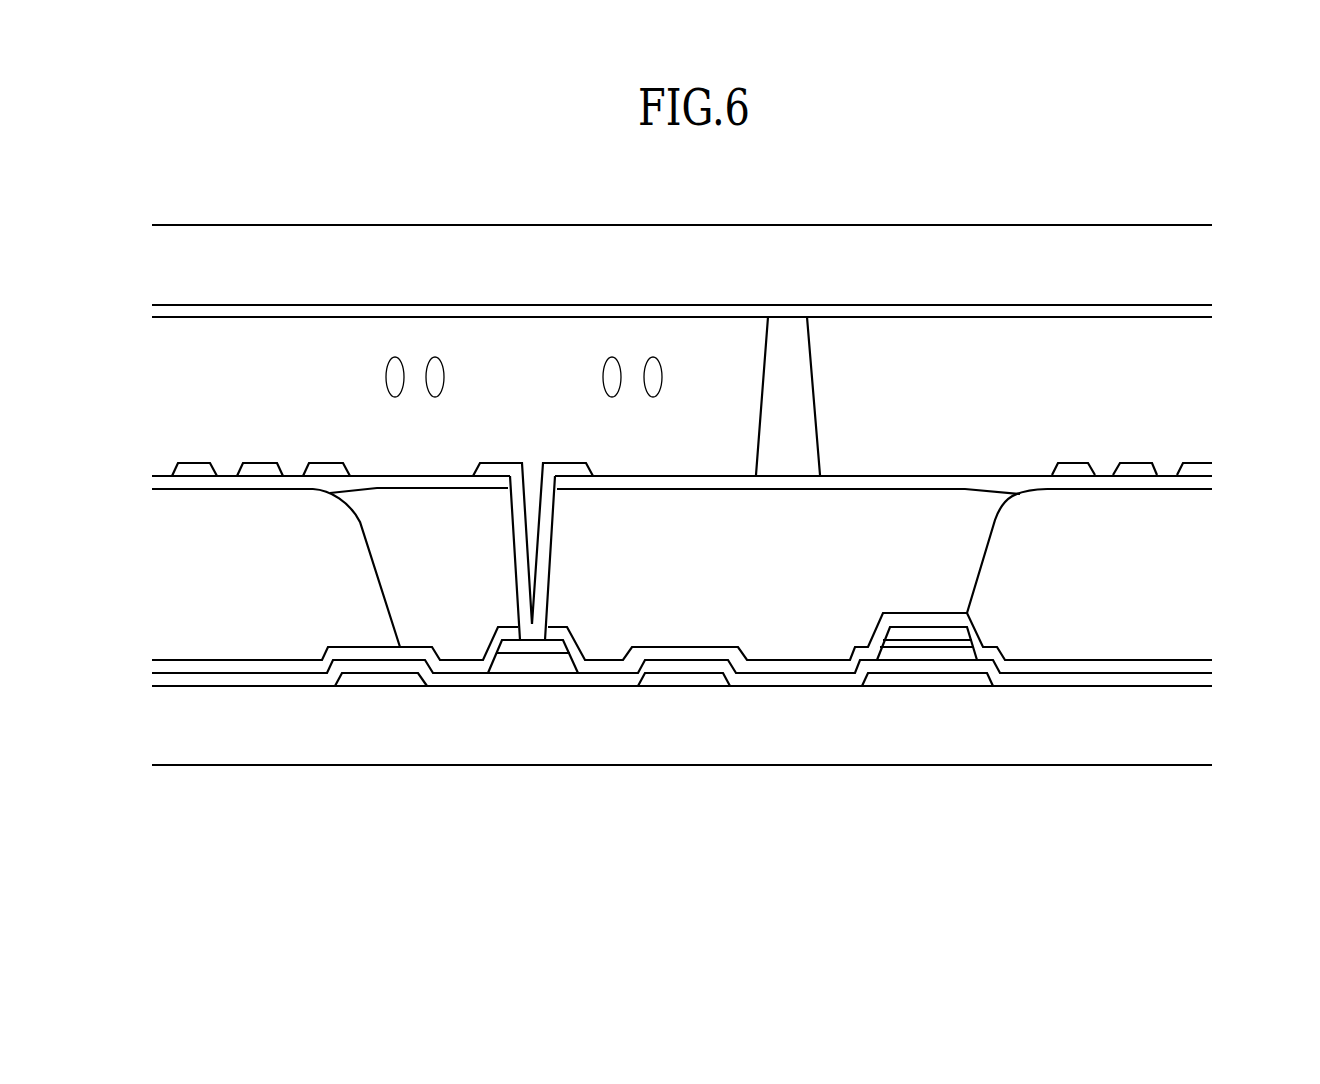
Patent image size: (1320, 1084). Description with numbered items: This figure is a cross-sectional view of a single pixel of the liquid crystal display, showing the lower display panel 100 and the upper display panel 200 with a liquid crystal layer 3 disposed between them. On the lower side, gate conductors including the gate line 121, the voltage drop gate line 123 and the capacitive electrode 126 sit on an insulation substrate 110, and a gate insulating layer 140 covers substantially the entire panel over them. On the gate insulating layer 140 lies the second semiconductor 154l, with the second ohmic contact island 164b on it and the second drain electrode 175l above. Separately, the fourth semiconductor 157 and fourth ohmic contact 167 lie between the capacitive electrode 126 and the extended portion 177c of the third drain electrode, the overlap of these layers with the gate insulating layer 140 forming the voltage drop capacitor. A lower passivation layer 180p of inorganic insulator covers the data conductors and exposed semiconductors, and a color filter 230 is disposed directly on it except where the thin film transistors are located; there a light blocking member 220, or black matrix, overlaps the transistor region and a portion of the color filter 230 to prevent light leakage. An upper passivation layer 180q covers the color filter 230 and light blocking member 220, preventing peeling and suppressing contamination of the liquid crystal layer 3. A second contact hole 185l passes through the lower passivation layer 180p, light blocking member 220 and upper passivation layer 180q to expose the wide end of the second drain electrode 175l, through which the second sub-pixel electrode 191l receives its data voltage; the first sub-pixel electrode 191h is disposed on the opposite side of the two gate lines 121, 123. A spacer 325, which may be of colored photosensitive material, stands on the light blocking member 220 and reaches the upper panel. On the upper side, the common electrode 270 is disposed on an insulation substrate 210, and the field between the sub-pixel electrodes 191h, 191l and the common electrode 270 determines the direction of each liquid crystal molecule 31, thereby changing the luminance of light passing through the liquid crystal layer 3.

The upper display panel 200 is at (1225, 225).
The insulation substrate 210 is at (780, 250).
The common electrode 270 is at (1093, 312).
The liquid crystal layer 3 is at (1225, 322).
The liquid crystal molecule 31 is at (444, 377).
The spacer 325 is at (798, 373).
The lower display panel 100 is at (1225, 478).
The insulation substrate 110 is at (648, 742).
The voltage drop gate line 123 is at (380, 678).
The gate line 121 is at (702, 680).
The capacitive electrode 126 is at (887, 678).
The gate insulating layer 140 is at (800, 678).
The second semiconductor 154l is at (507, 665).
The second ohmic contact island 164b is at (528, 656).
The second drain electrode 175l is at (543, 647).
The fourth semiconductor 157 is at (920, 652).
The fourth ohmic contact 167 is at (935, 643).
The extended portion of the third drain electrode 177c is at (950, 633).
The lower passivation layer 180p is at (248, 667).
The upper passivation layer 180q is at (395, 483).
The light blocking member 220 is at (680, 540).
The color filter 230 is at (188, 615).
The second contact hole 185l is at (539, 530).
The second sub-pixel electrode 191l is at (195, 468).
The first sub-pixel electrode 191h is at (1077, 468).